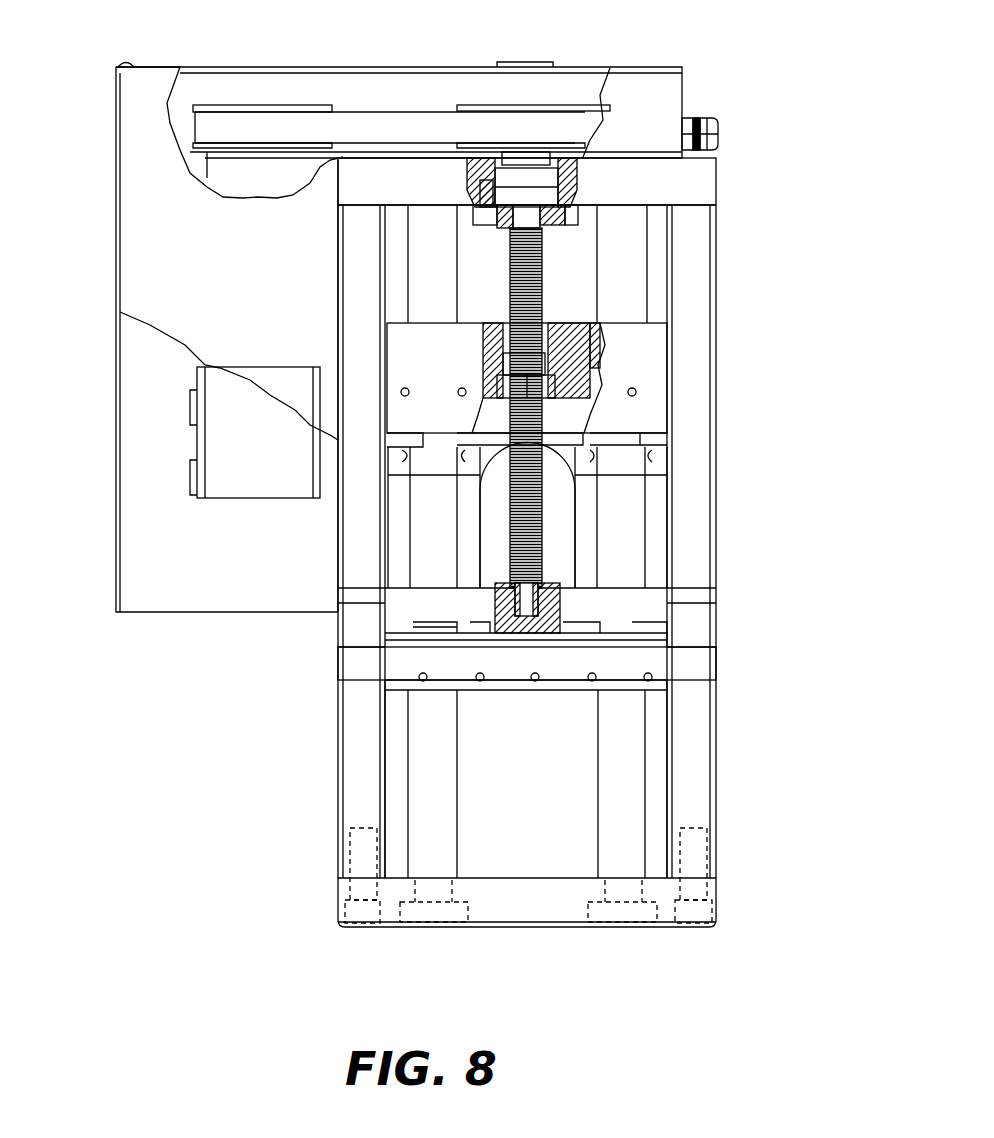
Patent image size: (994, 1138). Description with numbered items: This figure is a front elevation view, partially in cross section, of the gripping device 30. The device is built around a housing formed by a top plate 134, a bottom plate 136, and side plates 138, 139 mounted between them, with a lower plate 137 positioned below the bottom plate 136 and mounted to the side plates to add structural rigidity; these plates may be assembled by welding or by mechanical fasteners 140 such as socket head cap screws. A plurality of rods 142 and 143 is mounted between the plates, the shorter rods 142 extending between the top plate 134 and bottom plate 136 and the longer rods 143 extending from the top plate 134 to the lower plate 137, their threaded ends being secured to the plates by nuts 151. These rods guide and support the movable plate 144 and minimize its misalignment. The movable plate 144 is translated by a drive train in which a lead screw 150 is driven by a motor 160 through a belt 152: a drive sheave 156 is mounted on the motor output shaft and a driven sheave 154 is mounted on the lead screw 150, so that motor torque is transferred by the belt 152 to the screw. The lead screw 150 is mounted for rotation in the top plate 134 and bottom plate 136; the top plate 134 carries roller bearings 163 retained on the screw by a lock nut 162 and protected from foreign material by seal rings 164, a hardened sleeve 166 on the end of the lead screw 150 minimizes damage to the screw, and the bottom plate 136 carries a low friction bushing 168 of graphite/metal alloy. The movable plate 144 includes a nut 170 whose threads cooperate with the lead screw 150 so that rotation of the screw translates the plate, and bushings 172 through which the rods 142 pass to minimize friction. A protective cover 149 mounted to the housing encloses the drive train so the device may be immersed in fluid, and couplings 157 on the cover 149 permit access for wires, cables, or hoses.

The gripping device 30 is at (776, 86).
The top plate 134 is at (706, 183).
The bottom plate 136 is at (708, 662).
The lower plate 137 is at (530, 912).
The side plate 138 is at (350, 780).
The side plate 139 is at (705, 497).
The mechanical fasteners 140 is at (362, 912).
The rods 142 is at (430, 270).
The rods 143 is at (603, 752).
The movable plate 144 is at (650, 370).
The protective cover 149 is at (128, 115).
The lead screw 150 is at (515, 522).
The nuts 151 is at (435, 912).
The belt 152 is at (394, 127).
The driven sheave 154 is at (563, 103).
The drive sheave 156 is at (265, 107).
The couplings 157 is at (717, 122).
The motor 160 is at (262, 490).
The lock nut 162 is at (545, 160).
The roller bearings 163 is at (542, 198).
The seal rings 164 is at (503, 226).
The sleeve 166 is at (545, 222).
The low friction bushing 168 is at (518, 603).
The nut 170 is at (525, 363).
The bushings 172 is at (595, 325).